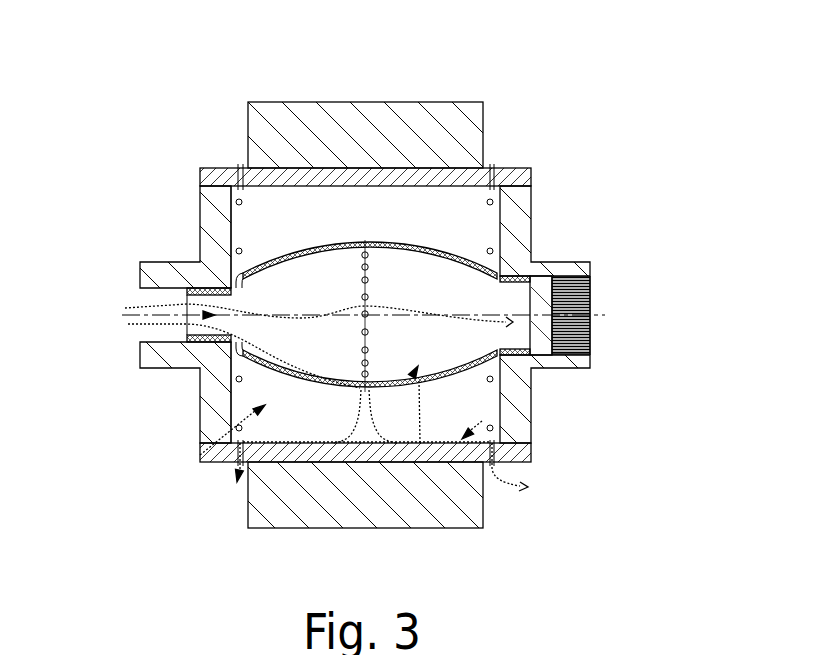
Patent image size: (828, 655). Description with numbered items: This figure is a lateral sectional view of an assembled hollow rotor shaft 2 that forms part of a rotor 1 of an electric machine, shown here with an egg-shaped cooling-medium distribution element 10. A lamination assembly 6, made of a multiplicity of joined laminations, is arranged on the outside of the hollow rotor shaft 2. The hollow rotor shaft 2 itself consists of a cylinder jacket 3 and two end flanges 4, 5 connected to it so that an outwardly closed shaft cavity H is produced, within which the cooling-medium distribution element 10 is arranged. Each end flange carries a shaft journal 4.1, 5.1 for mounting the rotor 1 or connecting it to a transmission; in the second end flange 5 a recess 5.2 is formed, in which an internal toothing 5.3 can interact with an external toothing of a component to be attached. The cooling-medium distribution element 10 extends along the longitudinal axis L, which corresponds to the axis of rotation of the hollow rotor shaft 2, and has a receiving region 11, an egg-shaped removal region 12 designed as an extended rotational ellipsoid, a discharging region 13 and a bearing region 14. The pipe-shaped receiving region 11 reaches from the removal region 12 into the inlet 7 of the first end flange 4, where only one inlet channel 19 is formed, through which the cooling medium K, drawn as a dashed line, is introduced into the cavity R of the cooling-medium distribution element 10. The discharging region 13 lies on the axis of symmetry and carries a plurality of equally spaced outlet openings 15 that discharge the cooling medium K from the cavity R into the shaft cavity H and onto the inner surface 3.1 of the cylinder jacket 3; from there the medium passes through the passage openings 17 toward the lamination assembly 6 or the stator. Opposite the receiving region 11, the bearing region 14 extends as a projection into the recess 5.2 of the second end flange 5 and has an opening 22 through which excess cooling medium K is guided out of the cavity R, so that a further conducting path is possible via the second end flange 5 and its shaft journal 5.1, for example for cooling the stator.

The rotor 1 is at (470, 56).
The hollow rotor shaft 2 is at (210, 93).
The cylinder jacket 3 is at (205, 165).
The inner surface 3.1 is at (534, 441).
The end flange 4 is at (198, 203).
The shaft journal 4.1 is at (160, 263).
The end flange 5 is at (531, 212).
The shaft journal 5.1 is at (536, 285).
The recess 5.2 is at (565, 262).
The toothing 5.3 is at (601, 334).
The lamination assembly 6 is at (372, 104).
The inlet 7 is at (150, 338).
The cooling-medium distribution element 10 is at (414, 240).
The receiving region 11 is at (185, 343).
The removal region 12 is at (275, 372).
The discharging region 13 is at (372, 350).
The bearing region 14 is at (537, 378).
The outlet openings 15 is at (370, 268).
The passage openings 17 is at (493, 470).
The inlet channel 19 is at (140, 310).
The opening 22 is at (592, 365).
The shaft cavity H is at (200, 458).
The cooling medium K is at (237, 485).
The longitudinal axis L is at (598, 318).
The cavity R is at (420, 443).